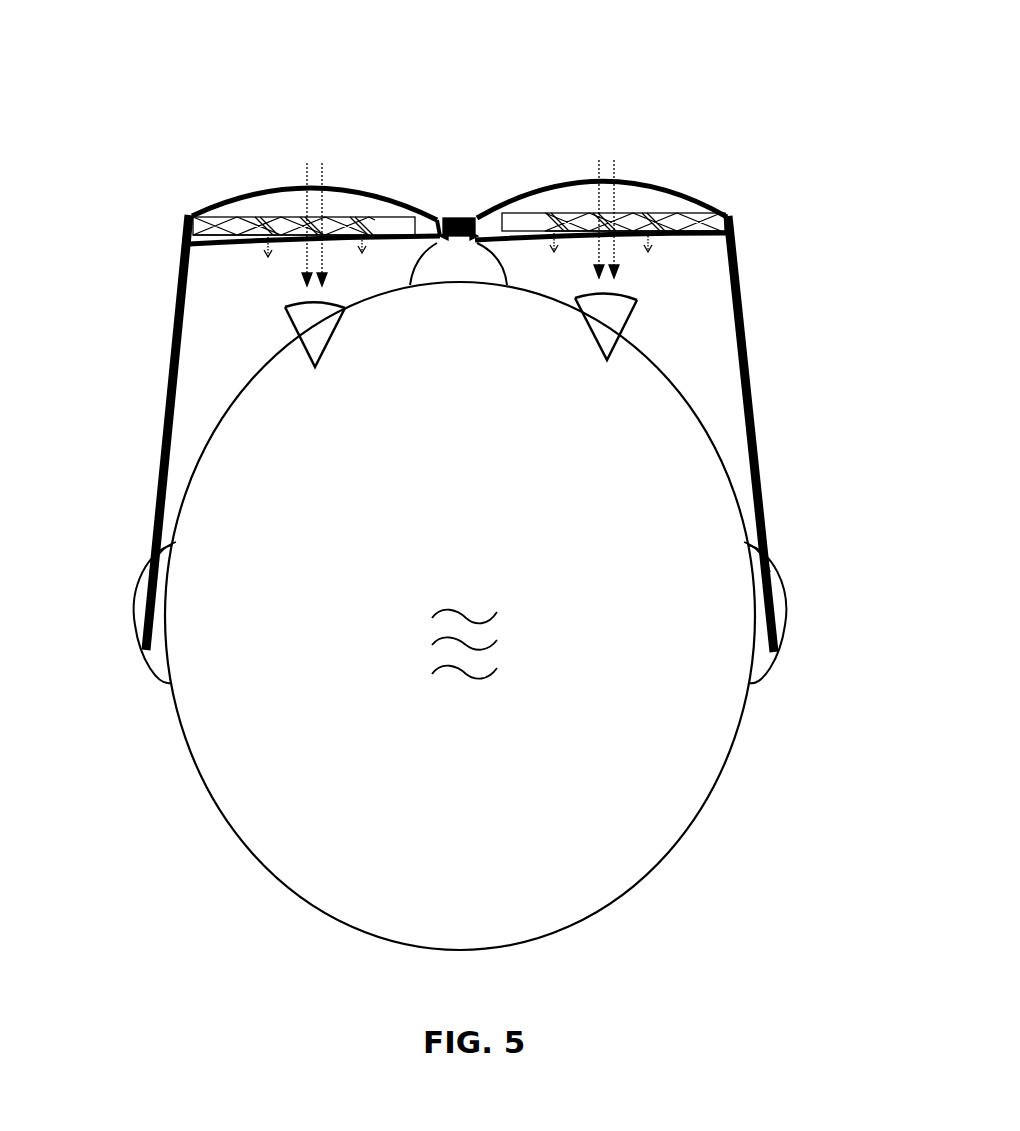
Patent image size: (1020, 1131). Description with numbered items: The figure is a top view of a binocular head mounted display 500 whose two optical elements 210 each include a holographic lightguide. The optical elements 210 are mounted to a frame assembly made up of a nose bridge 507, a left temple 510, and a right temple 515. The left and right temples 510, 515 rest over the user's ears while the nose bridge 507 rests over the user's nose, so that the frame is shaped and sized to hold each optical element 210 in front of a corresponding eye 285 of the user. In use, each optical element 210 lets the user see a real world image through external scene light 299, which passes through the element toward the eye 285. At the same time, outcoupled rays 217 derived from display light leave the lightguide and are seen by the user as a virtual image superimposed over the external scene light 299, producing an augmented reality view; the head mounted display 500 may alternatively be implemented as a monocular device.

The binocular head mounted display 500 is at (705, 68).
The optical element 210 is at (212, 205).
The nose bridge 507 is at (455, 218).
The external scene light 299 is at (305, 166).
The outcoupled rays 217 is at (264, 249).
The eye 285 is at (325, 355).
The left temple 510 is at (162, 435).
The right temple 515 is at (757, 435).